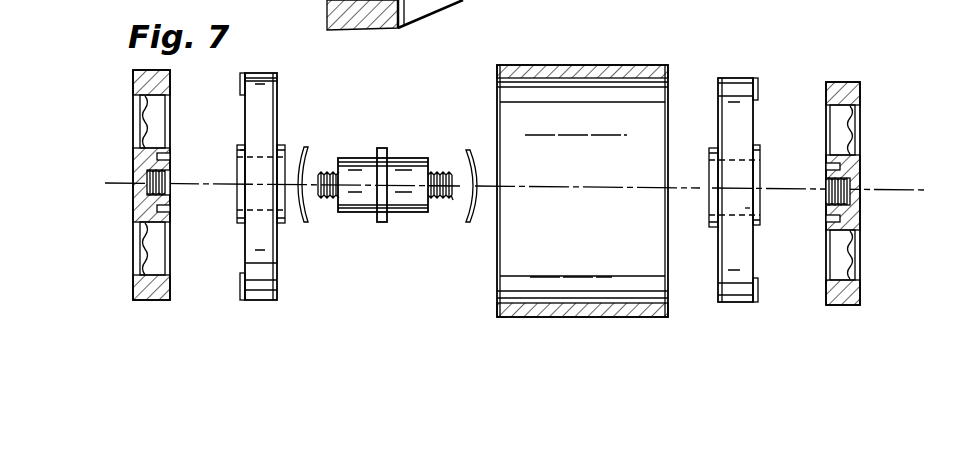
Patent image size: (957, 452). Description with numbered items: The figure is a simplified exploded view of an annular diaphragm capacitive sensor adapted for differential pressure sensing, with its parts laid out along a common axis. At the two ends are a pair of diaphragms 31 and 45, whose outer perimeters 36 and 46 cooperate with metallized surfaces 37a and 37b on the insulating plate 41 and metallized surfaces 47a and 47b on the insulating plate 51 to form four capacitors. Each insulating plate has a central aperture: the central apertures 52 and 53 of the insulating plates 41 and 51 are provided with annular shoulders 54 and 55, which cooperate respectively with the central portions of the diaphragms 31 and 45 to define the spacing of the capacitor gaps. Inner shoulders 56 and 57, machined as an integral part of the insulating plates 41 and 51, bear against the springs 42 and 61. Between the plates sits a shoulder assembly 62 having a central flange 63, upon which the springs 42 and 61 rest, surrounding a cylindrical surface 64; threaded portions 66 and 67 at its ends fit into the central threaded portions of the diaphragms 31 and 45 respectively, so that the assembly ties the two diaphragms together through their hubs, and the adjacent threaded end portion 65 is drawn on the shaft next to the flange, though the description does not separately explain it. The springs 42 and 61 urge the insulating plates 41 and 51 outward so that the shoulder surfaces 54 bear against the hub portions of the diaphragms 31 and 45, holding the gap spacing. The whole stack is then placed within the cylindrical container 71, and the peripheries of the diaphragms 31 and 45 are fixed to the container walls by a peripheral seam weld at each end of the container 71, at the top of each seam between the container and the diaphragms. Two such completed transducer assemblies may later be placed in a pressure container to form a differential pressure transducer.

The diaphragm 31 is at (140, 243).
The outer perimeter 36 is at (147, 298).
The metallized surface 37a is at (240, 290).
The metallized surface 37b is at (243, 78).
The insulating plate 41 is at (262, 277).
The spring 42 is at (305, 150).
The diaphragm 45 is at (858, 248).
The outer perimeter 46 is at (850, 297).
The metallized surface 47a is at (756, 298).
The metallized surface 47b is at (760, 82).
The insulating plate 51 is at (722, 266).
The central aperture 52 is at (250, 203).
The central aperture 53 is at (750, 208).
The annular shoulder 54 is at (240, 150).
The annular shoulder 55 is at (757, 150).
The inner shoulder 56 is at (284, 150).
The inner shoulder 57 is at (712, 150).
The spring 61 is at (468, 152).
The shoulder assembly 62 is at (386, 191).
The central flange 63 is at (384, 148).
The cylindrical surface 64 is at (372, 214).
The right threaded end 65 is at (416, 213).
The threaded portion 66 is at (326, 200).
The threaded portion 67 is at (451, 200).
The cylindrical container 71 is at (598, 64).